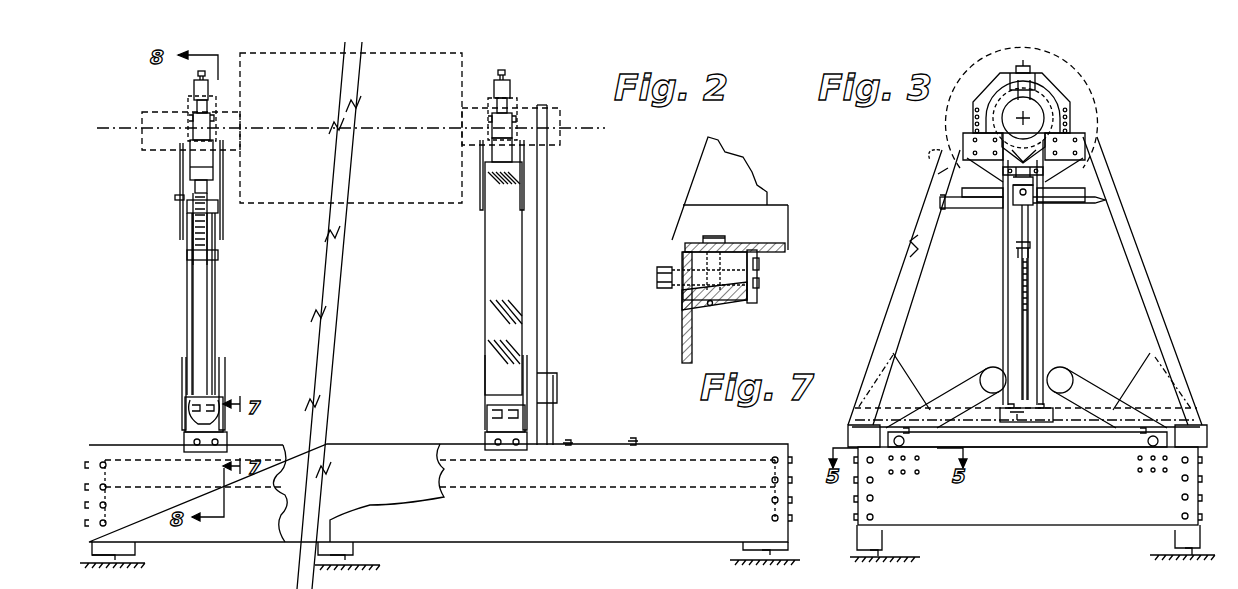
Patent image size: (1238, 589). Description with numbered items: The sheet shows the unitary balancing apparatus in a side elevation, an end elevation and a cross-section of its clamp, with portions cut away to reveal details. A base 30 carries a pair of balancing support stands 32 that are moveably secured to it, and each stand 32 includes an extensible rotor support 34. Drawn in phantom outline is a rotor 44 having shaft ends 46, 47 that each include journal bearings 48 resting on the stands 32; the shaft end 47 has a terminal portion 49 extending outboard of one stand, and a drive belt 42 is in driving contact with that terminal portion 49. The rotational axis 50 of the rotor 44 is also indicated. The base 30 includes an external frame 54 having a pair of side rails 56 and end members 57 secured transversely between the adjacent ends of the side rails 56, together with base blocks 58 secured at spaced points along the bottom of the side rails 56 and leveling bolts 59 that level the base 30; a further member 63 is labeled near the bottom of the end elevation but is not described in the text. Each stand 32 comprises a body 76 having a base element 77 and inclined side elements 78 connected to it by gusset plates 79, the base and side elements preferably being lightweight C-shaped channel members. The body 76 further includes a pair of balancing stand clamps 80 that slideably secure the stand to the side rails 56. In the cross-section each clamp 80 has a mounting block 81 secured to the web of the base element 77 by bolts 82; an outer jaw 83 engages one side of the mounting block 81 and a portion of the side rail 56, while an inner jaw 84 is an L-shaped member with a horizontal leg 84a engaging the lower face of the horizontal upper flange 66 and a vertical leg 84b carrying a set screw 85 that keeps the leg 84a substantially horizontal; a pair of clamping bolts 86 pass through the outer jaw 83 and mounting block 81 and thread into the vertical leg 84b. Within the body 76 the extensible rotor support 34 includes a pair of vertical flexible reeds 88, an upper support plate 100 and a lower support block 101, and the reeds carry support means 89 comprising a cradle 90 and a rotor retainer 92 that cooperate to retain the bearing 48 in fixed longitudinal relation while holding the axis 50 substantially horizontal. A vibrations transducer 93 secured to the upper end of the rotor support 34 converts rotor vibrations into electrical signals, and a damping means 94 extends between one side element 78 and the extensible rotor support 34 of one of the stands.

In FIG. 2, the base 30 is at (722, 444).
In FIG. 2, the balancing support stand 32 is at (172, 258).
In FIG. 3, the balancing support stand 32 is at (1135, 204).
In FIG. 3, the extensible rotor support 34 is at (1036, 286).
In FIG. 2, the drive belt 42 is at (548, 287).
In FIG. 3, the drive belt 42 is at (1048, 316).
In FIG. 2, the rotor 44 is at (462, 60).
In FIG. 3, the rotor 44 is at (1080, 60).
In FIG. 2, the shaft end 46 is at (142, 112).
In FIG. 2, the shaft end 47 is at (573, 147).
In FIG. 2, the journal bearing 48 is at (235, 118).
In FIG. 3, the journal bearing 48 is at (966, 70).
In FIG. 2, the terminal portion 49 is at (572, 130).
In FIG. 2, the rotational axis 50 is at (583, 128).
In FIG. 3, the rotational axis 50 is at (1018, 116).
In FIG. 2, the external frame 54 is at (530, 545).
In FIG. 2, the side rail 56 is at (438, 490).
In FIG. 7, the side rail 56 is at (682, 347).
In FIG. 3, the end member 57 is at (1028, 486).
In FIG. 2, the base block 58 is at (135, 550).
In FIG. 3, the base block 58 is at (882, 540).
In FIG. 2, the leveling bolt 59 is at (118, 558).
In FIG. 3, the leveling bolt 59 is at (878, 553).
In FIG. 3, the member 63 is at (1003, 582).
In FIG. 7, the horizontal upper flange 66 is at (710, 308).
In FIG. 2, the body 76 is at (482, 245).
In FIG. 3, the body 76 is at (1140, 238).
In FIG. 2, the base element 77 is at (195, 423).
In FIG. 7, the base element 77 is at (786, 205).
In FIG. 3, the base element 77 is at (1078, 415).
In FIG. 2, the inclined side element 78 is at (495, 292).
In FIG. 3, the inclined side element 78 is at (922, 254).
In FIG. 2, the gusset plate 79 is at (178, 203).
In FIG. 7, the gusset plate 79 is at (730, 188).
In FIG. 3, the gusset plate 79 is at (1085, 146).
In FIG. 2, the balancing stand clamp 80 is at (170, 433).
In FIG. 7, the balancing stand clamp 80 is at (668, 308).
In FIG. 3, the balancing stand clamp 80 is at (1208, 428).
In FIG. 7, the mounting block 81 is at (690, 258).
In FIG. 2, the bolt 82 is at (195, 410).
In FIG. 7, the bolt 82 is at (714, 236).
In FIG. 2, the outer jaw 83 is at (190, 448).
In FIG. 7, the outer jaw 83 is at (680, 298).
In FIG. 7, the inner jaw 84 is at (770, 298).
In FIG. 7, the horizontal leg 84a is at (733, 300).
In FIG. 7, the vertical leg 84b is at (757, 262).
In FIG. 7, the set screw 85 is at (760, 250).
In FIG. 2, the clamping bolt 86 is at (213, 447).
In FIG. 7, the clamping bolt 86 is at (657, 276).
In FIG. 2, the vertical flexible reed 88 is at (212, 292).
In FIG. 3, the vertical flexible reed 88 is at (1025, 264).
In FIG. 2, the support means 89 is at (178, 136).
In FIG. 3, the support means 89 is at (1082, 112).
In FIG. 2, the cradle 90 is at (190, 155).
In FIG. 3, the cradle 90 is at (1065, 140).
In FIG. 2, the rotor retainer 92 is at (194, 92).
In FIG. 3, the rotor retainer 92 is at (1055, 92).
In FIG. 3, the vibrations transducer 93 is at (1058, 200).
In FIG. 3, the damping means 94 is at (985, 210).
In FIG. 3, the upper support plate 100 is at (1028, 205).
In FIG. 3, the lower support block 101 is at (1005, 414).